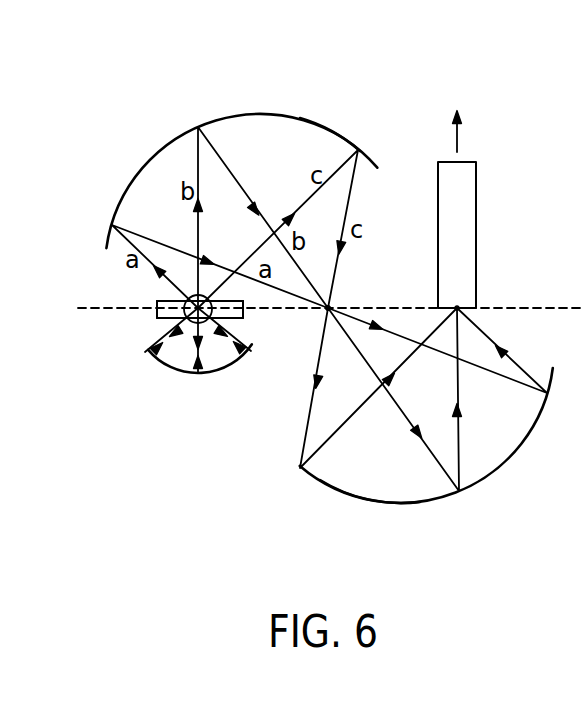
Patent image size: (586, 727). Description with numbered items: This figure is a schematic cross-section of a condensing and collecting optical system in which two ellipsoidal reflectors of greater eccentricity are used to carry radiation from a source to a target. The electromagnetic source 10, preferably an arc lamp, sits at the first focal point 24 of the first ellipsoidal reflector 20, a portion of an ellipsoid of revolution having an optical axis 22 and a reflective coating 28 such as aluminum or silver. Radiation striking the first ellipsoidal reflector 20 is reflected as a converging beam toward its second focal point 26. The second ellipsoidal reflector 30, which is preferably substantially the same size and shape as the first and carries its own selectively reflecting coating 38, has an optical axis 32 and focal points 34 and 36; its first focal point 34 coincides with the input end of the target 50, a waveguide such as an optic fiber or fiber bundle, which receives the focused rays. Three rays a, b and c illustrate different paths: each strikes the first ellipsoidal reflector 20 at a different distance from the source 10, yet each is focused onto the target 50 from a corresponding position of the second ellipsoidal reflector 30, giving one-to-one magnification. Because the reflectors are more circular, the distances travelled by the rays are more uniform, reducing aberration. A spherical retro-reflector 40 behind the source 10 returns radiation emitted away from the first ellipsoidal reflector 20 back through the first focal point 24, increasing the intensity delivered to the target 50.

The electromagnetic source 10 is at (163, 320).
The first ellipsoidal reflector 20 is at (258, 112).
The optical axis 22 is at (293, 314).
The first focal point 24 is at (177, 302).
The second focal point 26 is at (325, 311).
The reflective coating 28 is at (297, 118).
The second ellipsoidal reflector 30 is at (450, 495).
The optical axis 32 is at (377, 305).
The first focal point 34 is at (472, 300).
The focal point 36 is at (335, 307).
The coating 38 is at (362, 500).
The retro-reflector 40 is at (190, 374).
The target 50 is at (477, 248).